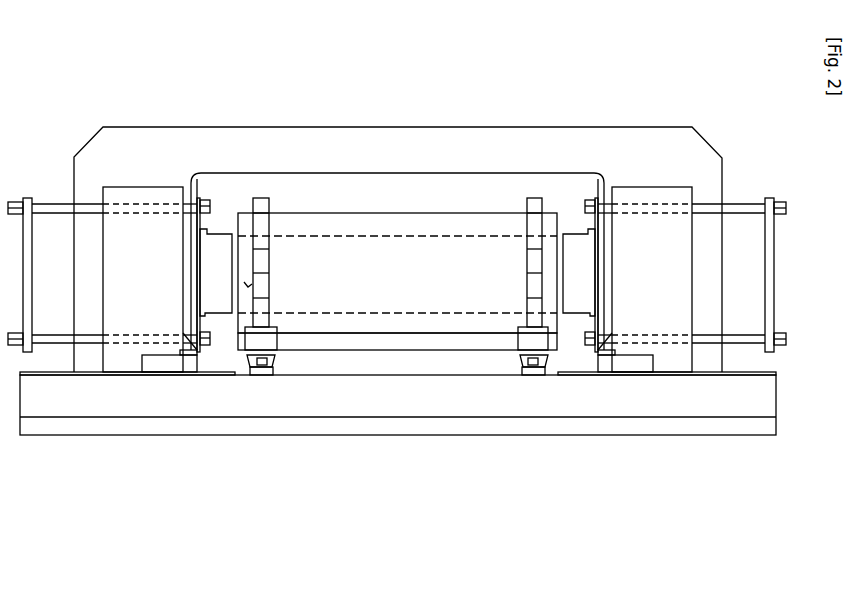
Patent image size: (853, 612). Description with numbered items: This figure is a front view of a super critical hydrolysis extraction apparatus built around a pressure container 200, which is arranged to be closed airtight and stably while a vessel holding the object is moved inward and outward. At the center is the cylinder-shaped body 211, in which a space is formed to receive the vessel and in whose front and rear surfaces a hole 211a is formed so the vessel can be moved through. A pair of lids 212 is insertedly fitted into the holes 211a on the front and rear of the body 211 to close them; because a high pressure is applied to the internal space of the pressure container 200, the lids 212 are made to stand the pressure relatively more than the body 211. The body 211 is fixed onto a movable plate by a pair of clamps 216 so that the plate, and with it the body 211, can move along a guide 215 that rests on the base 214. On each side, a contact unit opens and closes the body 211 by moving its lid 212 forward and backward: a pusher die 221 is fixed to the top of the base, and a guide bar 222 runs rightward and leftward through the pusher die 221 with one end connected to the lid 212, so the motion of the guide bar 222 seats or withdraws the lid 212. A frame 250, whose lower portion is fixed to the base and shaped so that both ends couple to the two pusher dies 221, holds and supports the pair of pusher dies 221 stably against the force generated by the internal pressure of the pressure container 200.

The pressure container 200 is at (358, 82).
The body 211 is at (347, 232).
The hole 211a is at (248, 287).
The lid 212 is at (217, 248).
The base plate 214 is at (467, 350).
The guide 215 is at (263, 375).
The clamp 216 is at (527, 290).
The pusher die 221 is at (153, 134).
The guide bar 222 is at (45, 200).
The frame 250 is at (690, 150).